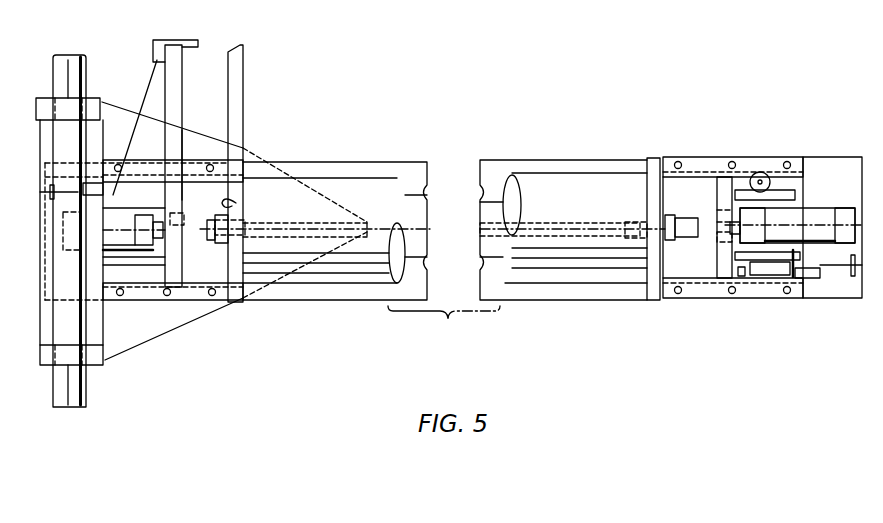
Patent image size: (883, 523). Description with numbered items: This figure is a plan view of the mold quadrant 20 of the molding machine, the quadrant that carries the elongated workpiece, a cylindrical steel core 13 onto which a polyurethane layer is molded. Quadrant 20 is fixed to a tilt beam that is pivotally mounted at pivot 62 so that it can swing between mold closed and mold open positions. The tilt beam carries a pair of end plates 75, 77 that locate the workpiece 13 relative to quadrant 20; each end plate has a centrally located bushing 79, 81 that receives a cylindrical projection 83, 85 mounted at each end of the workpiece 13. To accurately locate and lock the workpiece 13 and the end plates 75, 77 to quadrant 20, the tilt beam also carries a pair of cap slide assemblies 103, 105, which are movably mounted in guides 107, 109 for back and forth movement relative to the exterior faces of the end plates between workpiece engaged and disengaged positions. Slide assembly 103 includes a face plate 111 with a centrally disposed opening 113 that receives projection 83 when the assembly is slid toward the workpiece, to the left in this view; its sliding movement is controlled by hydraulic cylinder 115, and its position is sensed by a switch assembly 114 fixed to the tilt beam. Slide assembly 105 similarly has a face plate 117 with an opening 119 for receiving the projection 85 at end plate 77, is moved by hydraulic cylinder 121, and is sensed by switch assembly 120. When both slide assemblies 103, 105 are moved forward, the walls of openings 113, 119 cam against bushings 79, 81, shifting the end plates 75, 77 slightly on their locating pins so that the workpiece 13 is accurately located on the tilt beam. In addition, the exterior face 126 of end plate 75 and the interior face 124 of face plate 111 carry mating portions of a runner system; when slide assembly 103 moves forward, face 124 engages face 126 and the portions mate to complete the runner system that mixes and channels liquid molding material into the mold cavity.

The cylindrical steel core 13 is at (560, 192).
The mold quadrant 20 is at (410, 190).
The pivot 62 is at (88, 380).
The end plate 75 is at (243, 155).
The end plate 77 is at (654, 178).
The bushing 79 is at (253, 227).
The bushing 81 is at (643, 225).
The cylindrical projection 83 is at (222, 248).
The cylindrical projection 85 is at (672, 217).
The cap slide assembly 103 is at (152, 270).
The cap slide assembly 105 is at (742, 272).
The guides 107 is at (110, 162).
The guides 109 is at (765, 165).
The face plate 111 is at (170, 150).
The opening 113 is at (183, 222).
The switch assembly 114 is at (96, 180).
The hydraulic cylinder 115 is at (150, 233).
The face plate 117 is at (718, 185).
The opening 119 is at (715, 238).
The switch assembly 120 is at (815, 284).
The hydraulic cylinder 121 is at (818, 228).
The interior face 124 is at (183, 192).
The exterior face 126 is at (236, 203).